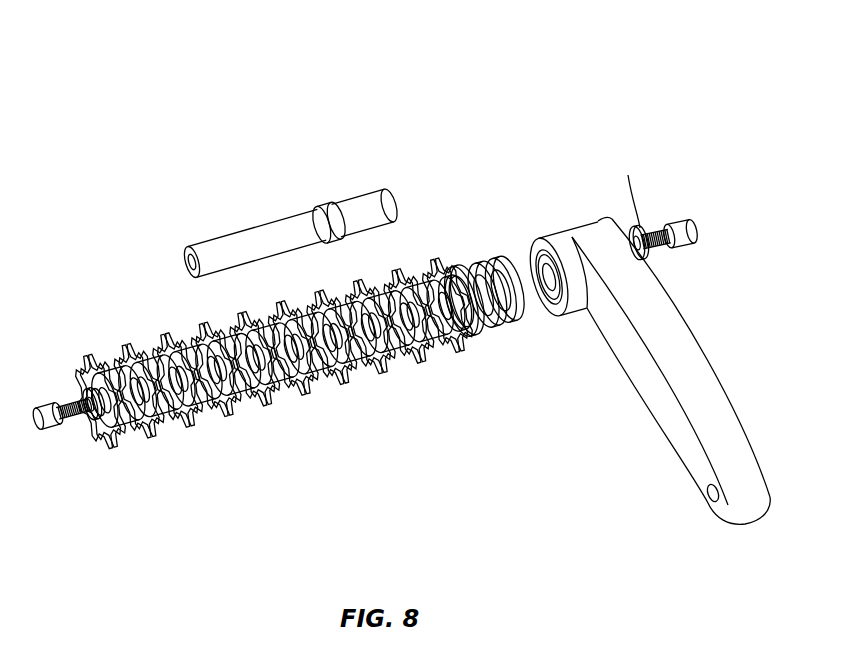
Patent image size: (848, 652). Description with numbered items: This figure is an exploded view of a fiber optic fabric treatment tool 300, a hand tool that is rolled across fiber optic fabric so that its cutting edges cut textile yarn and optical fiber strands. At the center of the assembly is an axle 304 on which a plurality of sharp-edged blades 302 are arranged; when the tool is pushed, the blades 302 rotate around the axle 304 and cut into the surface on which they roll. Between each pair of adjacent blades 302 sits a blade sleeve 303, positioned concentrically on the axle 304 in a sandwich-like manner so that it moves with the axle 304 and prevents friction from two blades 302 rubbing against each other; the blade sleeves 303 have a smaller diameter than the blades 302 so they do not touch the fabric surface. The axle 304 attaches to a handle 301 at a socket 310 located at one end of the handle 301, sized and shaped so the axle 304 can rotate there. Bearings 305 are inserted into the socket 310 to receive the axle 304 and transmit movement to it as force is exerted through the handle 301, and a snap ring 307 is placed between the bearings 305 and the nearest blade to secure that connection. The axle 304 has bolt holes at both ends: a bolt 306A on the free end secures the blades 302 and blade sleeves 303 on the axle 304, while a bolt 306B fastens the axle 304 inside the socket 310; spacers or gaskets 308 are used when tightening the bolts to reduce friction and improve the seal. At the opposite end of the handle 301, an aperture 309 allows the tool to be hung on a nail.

The fiber optic fabric treatment tool 300 is at (582, 157).
The handle 301 is at (717, 400).
The blades 302 is at (197, 398).
The blade sleeve 303 is at (350, 355).
The axle 304 is at (250, 233).
The bearings 305 is at (493, 267).
The bolt 306A is at (50, 430).
The bolt 306B is at (695, 233).
The snap ring 307 is at (472, 330).
The spacers or gaskets 308 is at (80, 388).
The aperture 309 is at (716, 500).
The socket 310 is at (547, 268).